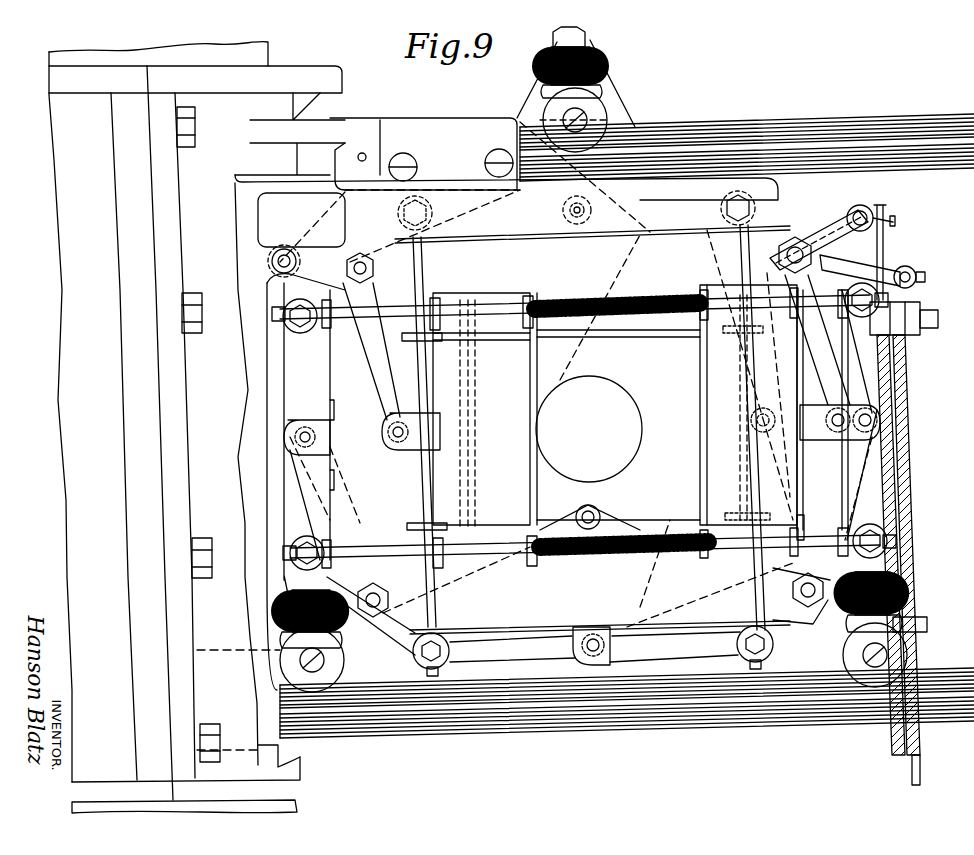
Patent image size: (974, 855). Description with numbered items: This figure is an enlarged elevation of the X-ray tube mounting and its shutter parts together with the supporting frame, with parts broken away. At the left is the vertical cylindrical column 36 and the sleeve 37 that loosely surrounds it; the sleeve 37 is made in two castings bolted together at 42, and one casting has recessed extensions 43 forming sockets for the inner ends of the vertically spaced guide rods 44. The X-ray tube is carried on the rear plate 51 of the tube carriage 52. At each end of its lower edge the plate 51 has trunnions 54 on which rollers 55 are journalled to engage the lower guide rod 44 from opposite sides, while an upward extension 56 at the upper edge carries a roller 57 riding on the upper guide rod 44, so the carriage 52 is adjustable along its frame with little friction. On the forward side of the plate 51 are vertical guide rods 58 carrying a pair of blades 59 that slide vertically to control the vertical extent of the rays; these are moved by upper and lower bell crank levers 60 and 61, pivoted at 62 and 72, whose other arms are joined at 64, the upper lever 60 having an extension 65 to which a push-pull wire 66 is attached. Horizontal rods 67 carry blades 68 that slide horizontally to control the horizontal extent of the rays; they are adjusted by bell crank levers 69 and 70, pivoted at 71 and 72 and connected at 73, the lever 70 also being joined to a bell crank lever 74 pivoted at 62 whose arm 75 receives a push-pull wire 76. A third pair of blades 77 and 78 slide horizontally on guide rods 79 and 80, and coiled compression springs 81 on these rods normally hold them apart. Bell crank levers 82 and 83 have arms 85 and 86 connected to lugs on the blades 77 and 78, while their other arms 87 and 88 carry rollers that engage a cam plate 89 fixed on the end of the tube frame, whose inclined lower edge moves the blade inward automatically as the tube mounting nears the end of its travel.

The vertical cylindrical column 36 is at (260, 52).
The sleeve 37 is at (72, 155).
The bolted joint of sleeve castings 42 is at (193, 128).
The recessed extensions 43 is at (362, 122).
The guide rods 44 is at (778, 126).
The rear plate 51 is at (300, 510).
The tube carriage 52 is at (592, 89).
The trunnions 54 is at (318, 608).
The roller 55 is at (322, 648).
The upward extension 56 is at (585, 88).
The roller 57 is at (596, 105).
The vertical guide rods 58 is at (427, 252).
The blades 59 is at (505, 238).
The upper bell crank lever 60 is at (606, 210).
The lower bell crank lever 61 is at (655, 636).
The pivot 62 is at (792, 245).
The pivotal connection of levers 64 is at (398, 224).
The extension 65 is at (912, 268).
The push-pull wire 66 is at (928, 302).
The horizontal rods 67 is at (318, 340).
The blades 68 is at (328, 378).
The bell crank lever 69 is at (330, 470).
The bell crank lever 70 is at (860, 455).
The pivot 71 is at (385, 618).
The pivot 72 is at (812, 607).
The pivotal connection of levers 73 is at (600, 510).
The bell crank lever 74 is at (905, 375).
The arm 75 is at (886, 222).
The push-pull wire 76 is at (896, 266).
The blade 77 is at (535, 365).
The blade 78 is at (710, 346).
The guide rod 79 is at (505, 298).
The guide rod 80 is at (530, 565).
The coiled compression springs 81 is at (600, 305).
The bell crank lever 82 is at (278, 273).
The bell crank lever 83 is at (820, 232).
The arm 85 is at (376, 346).
The arm 86 is at (832, 436).
The arm 87 is at (322, 248).
The arm 88 is at (855, 213).
The cam plate 89 is at (262, 216).